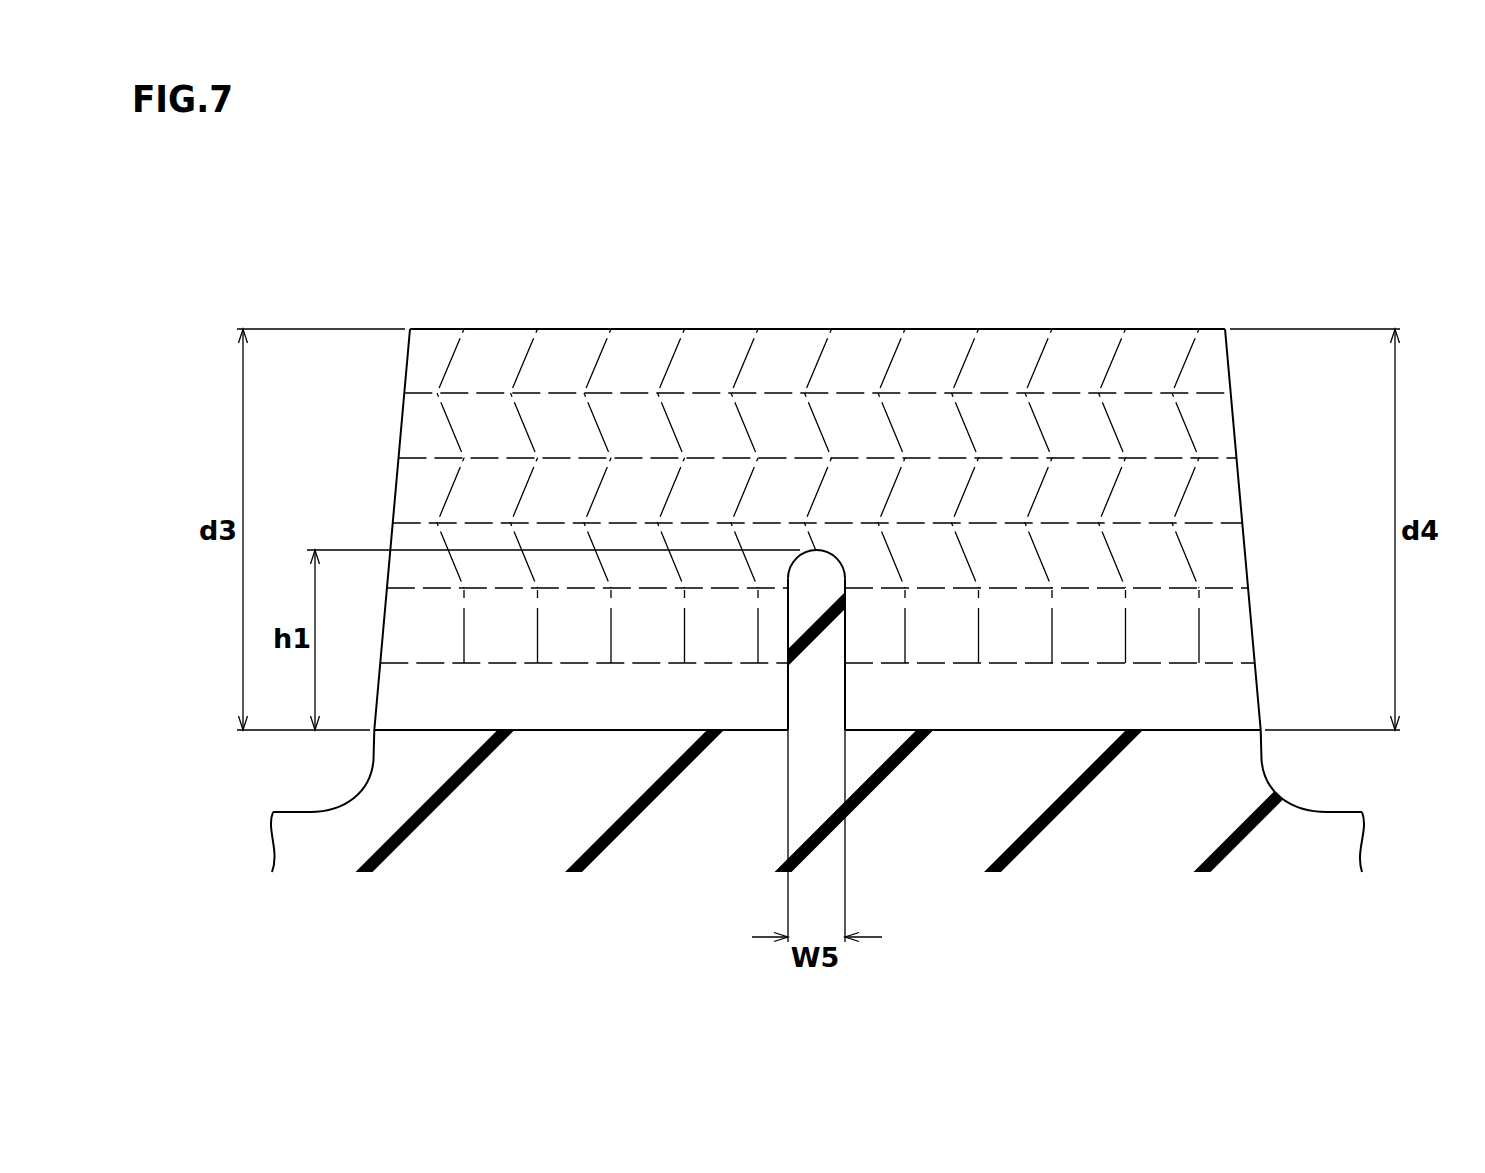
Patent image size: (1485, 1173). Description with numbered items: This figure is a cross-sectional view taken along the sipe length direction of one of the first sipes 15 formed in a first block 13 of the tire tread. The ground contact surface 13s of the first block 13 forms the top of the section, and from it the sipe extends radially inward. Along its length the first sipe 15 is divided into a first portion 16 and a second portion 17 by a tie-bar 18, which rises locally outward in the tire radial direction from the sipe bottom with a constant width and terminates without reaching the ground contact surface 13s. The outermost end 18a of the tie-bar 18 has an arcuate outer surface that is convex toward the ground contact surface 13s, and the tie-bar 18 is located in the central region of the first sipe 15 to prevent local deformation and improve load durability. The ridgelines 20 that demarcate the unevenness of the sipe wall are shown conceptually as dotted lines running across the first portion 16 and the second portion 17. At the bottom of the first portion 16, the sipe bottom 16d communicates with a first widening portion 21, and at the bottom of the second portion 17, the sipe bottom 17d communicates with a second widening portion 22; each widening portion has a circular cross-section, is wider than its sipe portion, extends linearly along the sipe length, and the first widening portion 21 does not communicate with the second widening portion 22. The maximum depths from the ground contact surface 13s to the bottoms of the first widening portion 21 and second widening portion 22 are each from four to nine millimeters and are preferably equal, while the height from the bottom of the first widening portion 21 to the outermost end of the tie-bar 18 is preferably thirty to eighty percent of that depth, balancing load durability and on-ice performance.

The first block 13 is at (408, 282).
The ground contact surface 13s is at (573, 329).
The first sipe 15 is at (496, 358).
The first portion 16 is at (630, 425).
The sipe bottom 16d is at (707, 663).
The second portion 17 is at (1001, 428).
The sipe bottom 17d is at (1160, 663).
The tie-bar 18 is at (813, 682).
The outermost end 18a is at (828, 550).
The ridgelines 20 is at (857, 393).
The first widening portion 21 is at (557, 692).
The second widening portion 22 is at (998, 692).